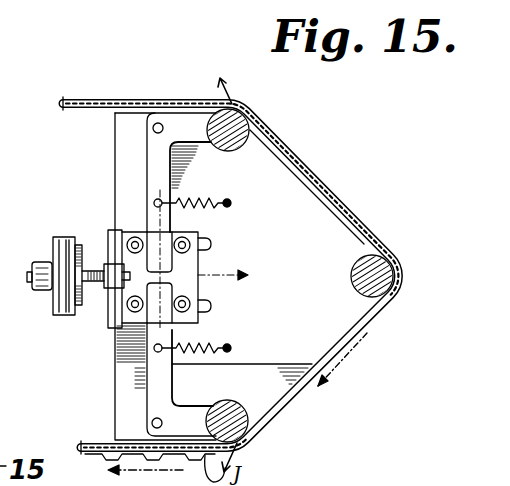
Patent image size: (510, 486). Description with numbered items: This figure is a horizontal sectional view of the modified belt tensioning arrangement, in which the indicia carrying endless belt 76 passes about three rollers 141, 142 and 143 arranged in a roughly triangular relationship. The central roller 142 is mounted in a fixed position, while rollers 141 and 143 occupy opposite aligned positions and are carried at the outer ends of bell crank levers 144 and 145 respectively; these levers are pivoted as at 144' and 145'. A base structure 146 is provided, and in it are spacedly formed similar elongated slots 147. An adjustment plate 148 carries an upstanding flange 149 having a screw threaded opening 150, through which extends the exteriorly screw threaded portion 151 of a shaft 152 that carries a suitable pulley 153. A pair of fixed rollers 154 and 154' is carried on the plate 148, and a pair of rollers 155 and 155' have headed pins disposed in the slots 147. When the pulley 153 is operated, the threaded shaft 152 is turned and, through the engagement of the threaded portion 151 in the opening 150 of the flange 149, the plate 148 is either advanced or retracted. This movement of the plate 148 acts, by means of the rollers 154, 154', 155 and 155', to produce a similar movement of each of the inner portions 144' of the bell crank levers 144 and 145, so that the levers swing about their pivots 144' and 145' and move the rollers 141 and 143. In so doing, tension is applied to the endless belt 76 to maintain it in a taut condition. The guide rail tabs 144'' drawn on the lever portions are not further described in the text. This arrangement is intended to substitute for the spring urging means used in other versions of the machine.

The endless belt 76 is at (332, 193).
The roller 141 is at (230, 152).
The central roller 142 is at (396, 251).
The roller 143 is at (243, 406).
The bell crank lever 144 is at (142, 172).
The pivot of bell crank lever 144' is at (161, 102).
The guide rail tab 144'' is at (205, 263).
The bell crank lever 145 is at (229, 379).
The pivot of bell crank lever 145' is at (111, 416).
The base structure 146 is at (321, 275).
The elongated slots 147 is at (212, 243).
The adjustment plate 148 is at (138, 325).
The upstanding flange 149 is at (108, 232).
The screw threaded opening 150 is at (95, 288).
The exteriorly screw threaded portion 151 is at (95, 268).
The shaft 152 is at (52, 293).
The pulley 153 is at (50, 262).
The fixed roller 154 is at (158, 249).
The fixed roller 154' is at (105, 354).
The roller with headed pin 155 is at (213, 207).
The roller with headed pin 155' is at (204, 318).